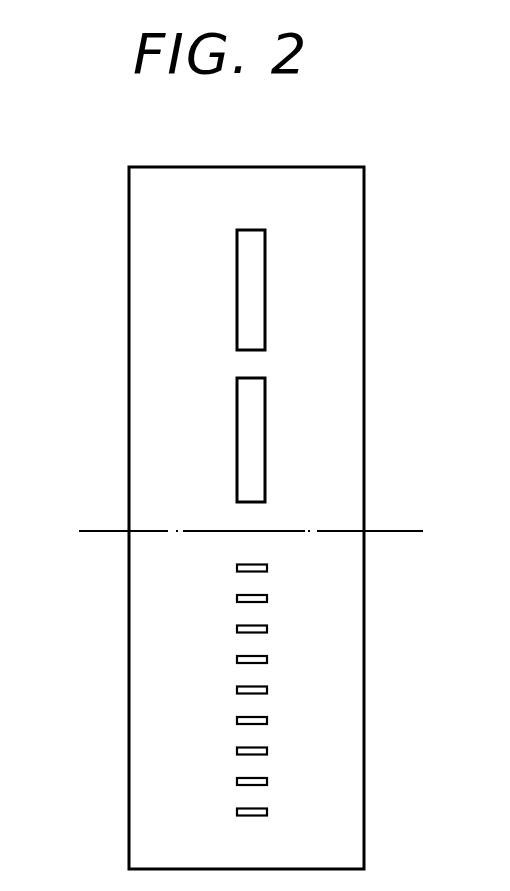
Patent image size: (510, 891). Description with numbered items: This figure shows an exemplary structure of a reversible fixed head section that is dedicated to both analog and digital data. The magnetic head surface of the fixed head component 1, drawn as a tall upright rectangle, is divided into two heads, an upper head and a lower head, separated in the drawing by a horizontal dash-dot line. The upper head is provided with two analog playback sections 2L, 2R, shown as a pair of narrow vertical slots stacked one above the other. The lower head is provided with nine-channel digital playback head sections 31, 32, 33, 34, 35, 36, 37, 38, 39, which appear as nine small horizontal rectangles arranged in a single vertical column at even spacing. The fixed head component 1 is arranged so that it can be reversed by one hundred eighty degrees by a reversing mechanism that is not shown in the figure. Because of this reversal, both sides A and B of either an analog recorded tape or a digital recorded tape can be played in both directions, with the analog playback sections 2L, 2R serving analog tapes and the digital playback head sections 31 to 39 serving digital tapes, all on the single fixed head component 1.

The fixed head component 1 is at (129, 222).
The analog playback section 2L is at (265, 288).
The analog playback section 2R is at (265, 453).
The digital playback head section 31 is at (267, 568).
The digital playback head section 32 is at (267, 598).
The digital playback head section 33 is at (267, 629).
The digital playback head section 34 is at (267, 660).
The digital playback head section 35 is at (267, 690).
The digital playback head section 36 is at (267, 720).
The digital playback head section 37 is at (267, 751).
The digital playback head section 38 is at (267, 782).
The digital playback head section 39 is at (267, 812).